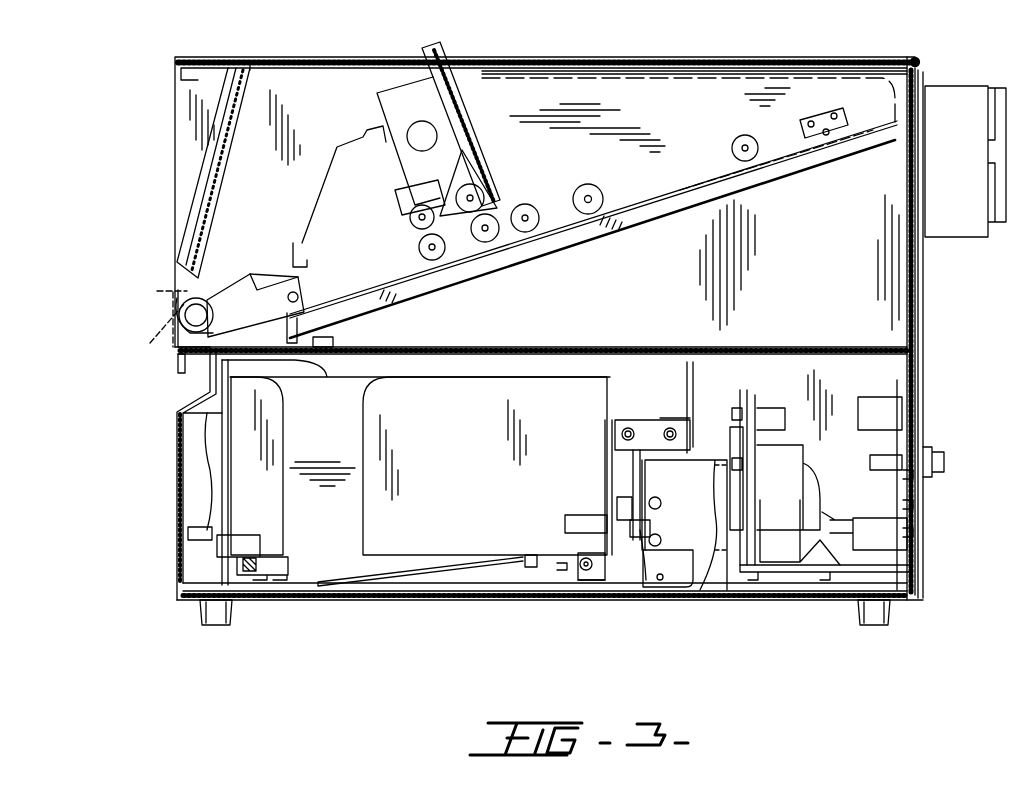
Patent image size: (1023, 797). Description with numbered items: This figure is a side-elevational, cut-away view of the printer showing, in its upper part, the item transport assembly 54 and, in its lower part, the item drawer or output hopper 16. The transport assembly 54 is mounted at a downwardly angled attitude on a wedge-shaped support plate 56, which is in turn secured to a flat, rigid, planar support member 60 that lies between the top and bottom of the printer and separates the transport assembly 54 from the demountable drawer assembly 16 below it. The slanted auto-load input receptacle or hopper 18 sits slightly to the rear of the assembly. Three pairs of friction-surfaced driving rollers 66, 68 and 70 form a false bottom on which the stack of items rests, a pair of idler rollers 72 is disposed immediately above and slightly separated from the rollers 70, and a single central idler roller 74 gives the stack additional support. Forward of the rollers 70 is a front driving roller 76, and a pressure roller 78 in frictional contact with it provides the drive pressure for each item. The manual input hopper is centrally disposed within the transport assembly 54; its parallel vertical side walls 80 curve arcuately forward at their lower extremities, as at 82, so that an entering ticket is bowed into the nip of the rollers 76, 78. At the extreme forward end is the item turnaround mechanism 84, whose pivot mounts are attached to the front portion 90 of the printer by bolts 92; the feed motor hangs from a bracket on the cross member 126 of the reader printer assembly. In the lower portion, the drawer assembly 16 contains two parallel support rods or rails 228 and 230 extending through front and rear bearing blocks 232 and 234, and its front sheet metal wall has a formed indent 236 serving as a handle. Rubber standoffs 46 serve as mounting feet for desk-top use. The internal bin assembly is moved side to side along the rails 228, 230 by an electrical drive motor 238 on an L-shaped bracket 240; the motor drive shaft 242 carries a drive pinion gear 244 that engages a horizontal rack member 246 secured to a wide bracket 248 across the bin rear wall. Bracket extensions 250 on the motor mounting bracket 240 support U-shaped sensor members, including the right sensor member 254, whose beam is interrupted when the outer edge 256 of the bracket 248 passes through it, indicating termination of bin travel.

The drawer or output hopper 16 is at (438, 481).
The item input receptacle 18 is at (649, 104).
The rubber standoffs 46 is at (220, 625).
The item transport assembly 54 is at (568, 62).
The wedge-shaped support plate 56 is at (605, 222).
The planar support member 60 is at (600, 352).
The driving rollers 66 is at (735, 146).
The driving rollers 68 is at (590, 186).
The driving rollers 70 is at (490, 242).
The idler rollers 72 is at (480, 194).
The idler roller 74 is at (535, 232).
The front driving roller 76 is at (437, 260).
The pressure roller 78 is at (411, 218).
The side walls of the hopper 80 is at (455, 83).
The curved lower extremities 82 is at (450, 217).
The item turnaround mechanism 84 is at (240, 270).
The front portion of the printer assembly 90 is at (200, 298).
The bolts 92 is at (298, 296).
The cross member 126 is at (405, 175).
The support rod or rail 228 is at (248, 572).
The support rod or rail 230 is at (582, 560).
The front bearing block 232 is at (272, 545).
The rear bearing block 234 is at (595, 577).
The formed indent 236 is at (197, 377).
The electrical drive motor 238 is at (702, 488).
The L-shaped bracket 240 is at (643, 580).
The motor drive shaft 242 is at (661, 503).
The drive pinion gear 244 is at (620, 470).
The rack member 246 is at (618, 492).
The bracket 248 is at (618, 520).
The bracket extensions 250 is at (661, 536).
The U-shaped sensor member 254 is at (672, 563).
The outer edge of the horizontal bracket 256 is at (637, 520).